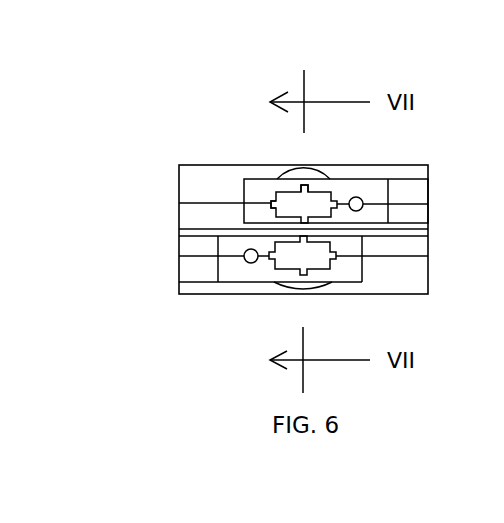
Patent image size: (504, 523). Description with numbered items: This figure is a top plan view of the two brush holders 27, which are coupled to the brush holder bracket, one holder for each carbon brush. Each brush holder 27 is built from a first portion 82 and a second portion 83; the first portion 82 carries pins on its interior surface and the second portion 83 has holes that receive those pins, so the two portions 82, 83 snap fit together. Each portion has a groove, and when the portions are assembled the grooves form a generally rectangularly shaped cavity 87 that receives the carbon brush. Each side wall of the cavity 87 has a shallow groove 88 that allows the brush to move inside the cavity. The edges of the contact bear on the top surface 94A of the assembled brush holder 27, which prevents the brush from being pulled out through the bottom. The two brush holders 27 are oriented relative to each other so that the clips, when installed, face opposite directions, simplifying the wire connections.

The brush holder 27 is at (192, 182).
The first portion 82 is at (412, 245).
The second portion 83 is at (415, 271).
The cavity 87 is at (313, 204).
The shallow groove 88 is at (303, 186).
The top surface 94A is at (320, 182).